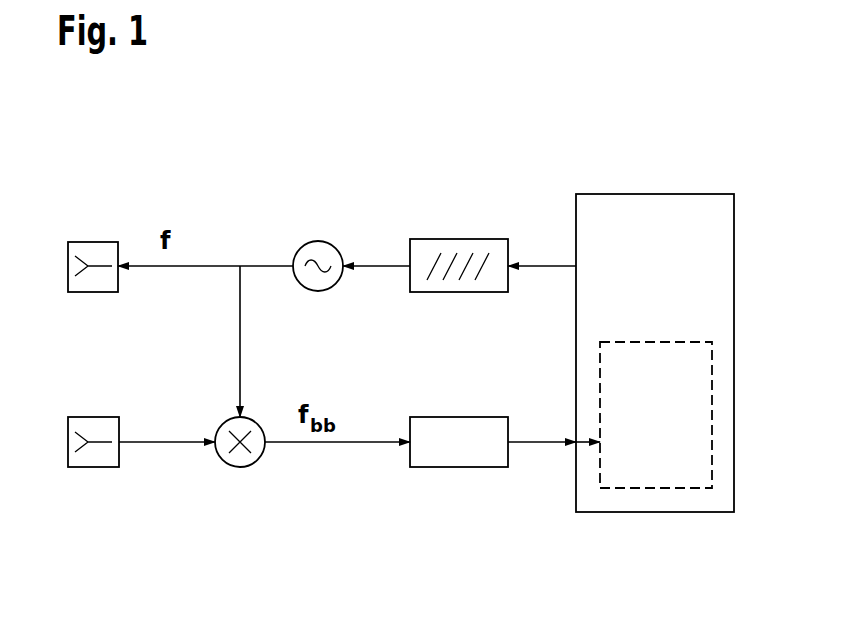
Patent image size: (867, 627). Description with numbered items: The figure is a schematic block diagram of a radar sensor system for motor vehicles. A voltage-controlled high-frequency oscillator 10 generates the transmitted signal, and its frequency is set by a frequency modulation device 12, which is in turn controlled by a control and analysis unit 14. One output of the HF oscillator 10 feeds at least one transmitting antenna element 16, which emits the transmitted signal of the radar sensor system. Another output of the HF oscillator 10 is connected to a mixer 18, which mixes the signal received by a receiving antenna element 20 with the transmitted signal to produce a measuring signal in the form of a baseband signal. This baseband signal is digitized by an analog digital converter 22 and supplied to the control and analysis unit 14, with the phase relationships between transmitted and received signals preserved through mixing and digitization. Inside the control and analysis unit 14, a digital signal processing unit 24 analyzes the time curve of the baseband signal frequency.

The high-frequency oscillator 10 is at (318, 241).
The frequency modulation device 12 is at (460, 239).
The control and analysis unit 14 is at (655, 194).
The transmitting antenna element 16 is at (94, 242).
The mixer 18 is at (243, 467).
The receiving antenna element 20 is at (94, 467).
The analog digital converter 22 is at (460, 467).
The digital signal processing unit 24 is at (660, 342).